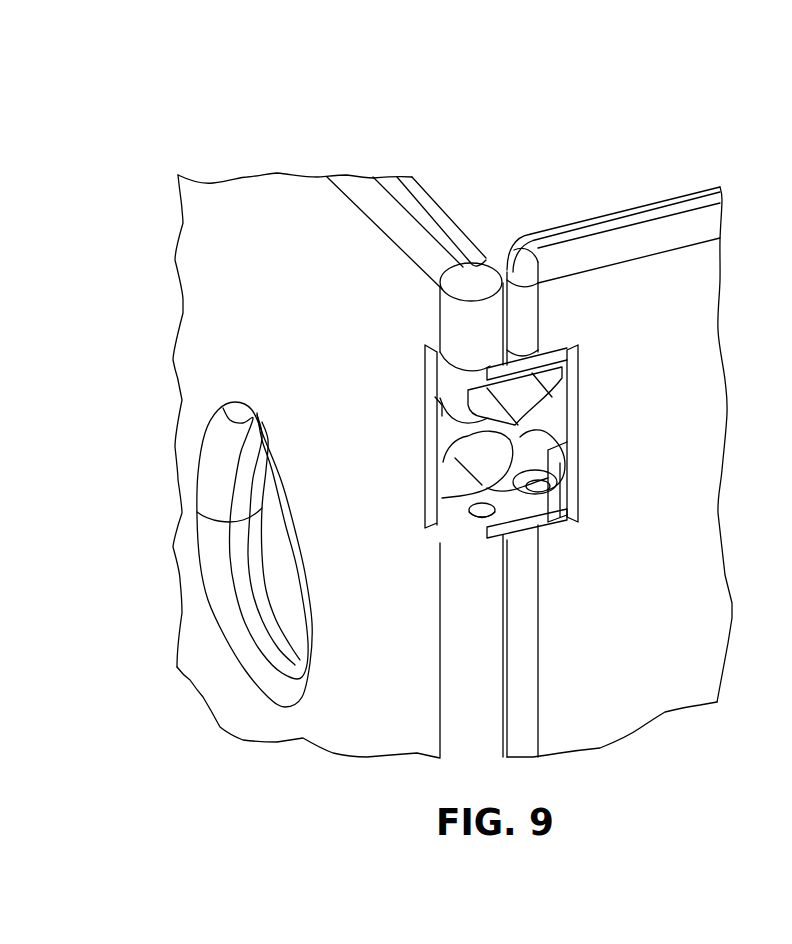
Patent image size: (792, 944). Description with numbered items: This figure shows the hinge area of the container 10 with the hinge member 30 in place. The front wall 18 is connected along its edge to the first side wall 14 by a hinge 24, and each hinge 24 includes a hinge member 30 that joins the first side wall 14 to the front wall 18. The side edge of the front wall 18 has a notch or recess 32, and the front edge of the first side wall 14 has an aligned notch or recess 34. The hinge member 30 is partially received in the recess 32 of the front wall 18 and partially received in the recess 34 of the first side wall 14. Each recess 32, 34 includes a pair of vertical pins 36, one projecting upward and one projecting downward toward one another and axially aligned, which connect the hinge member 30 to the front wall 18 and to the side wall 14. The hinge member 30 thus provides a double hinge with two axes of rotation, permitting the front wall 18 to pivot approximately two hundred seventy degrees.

The enclosure assembly 10 is at (246, 115).
The first side wall 14 is at (630, 207).
The front wall 18 is at (445, 213).
The hinge 24 is at (598, 334).
The hinge member 30 is at (567, 383).
The recess 32 is at (445, 420).
The recess 34 is at (567, 447).
The vertical pins 36 is at (457, 520).